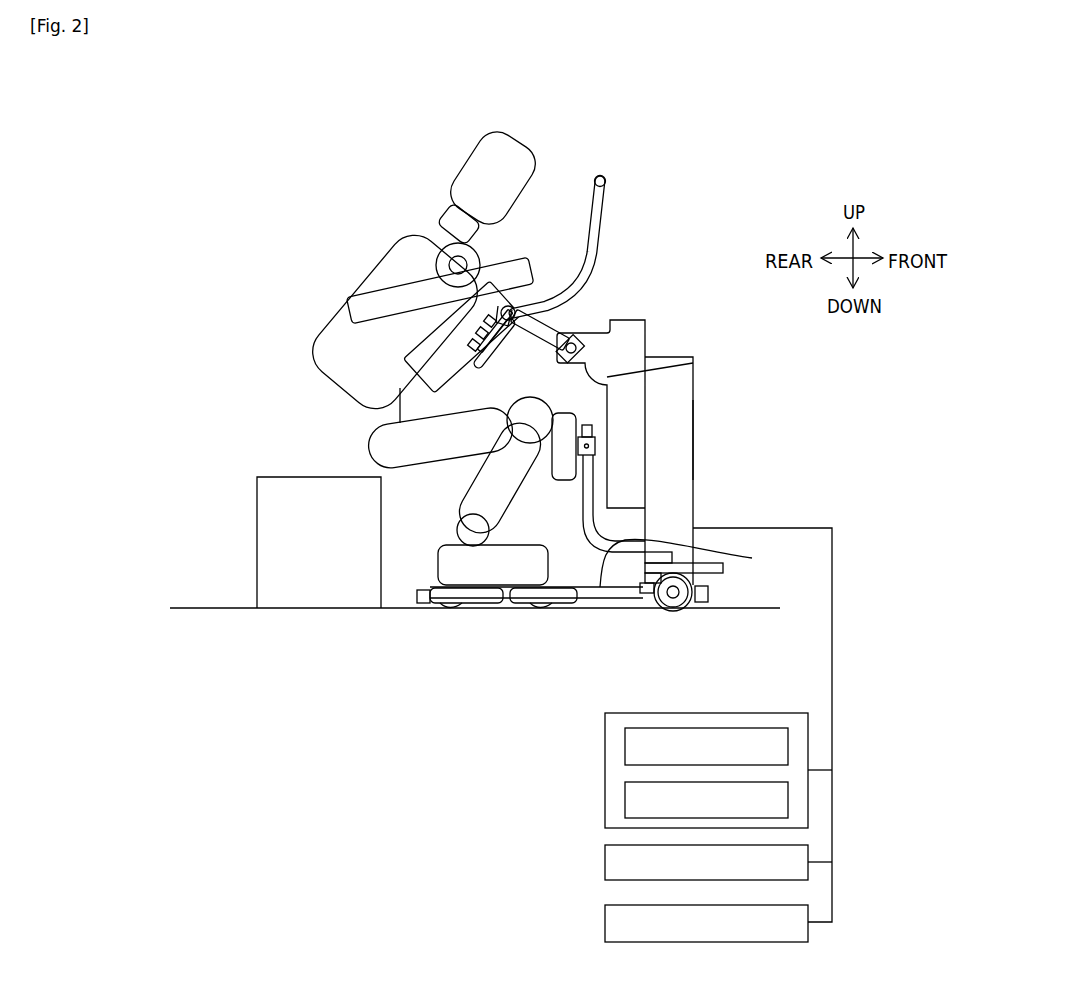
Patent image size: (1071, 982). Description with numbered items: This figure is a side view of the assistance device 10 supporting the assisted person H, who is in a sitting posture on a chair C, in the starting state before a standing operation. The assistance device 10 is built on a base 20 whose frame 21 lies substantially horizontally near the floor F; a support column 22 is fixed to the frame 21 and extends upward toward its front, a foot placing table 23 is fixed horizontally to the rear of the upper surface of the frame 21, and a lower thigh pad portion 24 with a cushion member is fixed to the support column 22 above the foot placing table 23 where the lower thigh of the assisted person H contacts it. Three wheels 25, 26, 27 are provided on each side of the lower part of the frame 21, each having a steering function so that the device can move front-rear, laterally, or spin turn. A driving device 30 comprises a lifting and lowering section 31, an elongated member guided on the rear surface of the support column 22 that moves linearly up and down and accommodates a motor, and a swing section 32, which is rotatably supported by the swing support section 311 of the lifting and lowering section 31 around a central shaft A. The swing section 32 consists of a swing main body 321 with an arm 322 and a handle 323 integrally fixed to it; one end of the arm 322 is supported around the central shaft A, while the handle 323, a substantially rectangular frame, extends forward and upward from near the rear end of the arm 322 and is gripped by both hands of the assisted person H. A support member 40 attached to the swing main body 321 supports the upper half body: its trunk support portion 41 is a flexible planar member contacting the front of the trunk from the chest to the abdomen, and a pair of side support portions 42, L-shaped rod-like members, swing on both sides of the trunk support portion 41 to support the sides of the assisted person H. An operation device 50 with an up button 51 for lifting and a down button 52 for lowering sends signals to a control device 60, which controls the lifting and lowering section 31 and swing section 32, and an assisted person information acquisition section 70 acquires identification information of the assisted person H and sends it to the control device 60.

The assistance device 10 is at (730, 251).
The base 20 is at (697, 442).
The frame 21 is at (647, 597).
The support column 22 is at (686, 484).
The foot placing table 23 is at (686, 563).
The lower thigh pad portion 24 is at (567, 462).
The wheel 25 is at (688, 590).
The wheel 26 is at (551, 610).
The wheel 27 is at (465, 610).
The driving device 30 is at (679, 333).
The lifting and lowering section 31 is at (633, 312).
The swing support section 311 is at (693, 363).
The swing section 32 is at (516, 340).
The swing main body 321 is at (497, 322).
The arm 322 is at (553, 332).
The handle 323 is at (607, 187).
The support member 40 is at (397, 305).
The trunk support portion 41 is at (430, 352).
The side support portion 42 is at (408, 306).
The operation device 50 is at (693, 749).
The up button 51 is at (625, 733).
The down button 52 is at (625, 788).
The control device 60 is at (605, 852).
The assisted person information acquisition section 70 is at (605, 908).
The assisted person H is at (303, 356).
The chair C is at (276, 513).
The floor F is at (204, 607).
The central shaft A is at (572, 342).